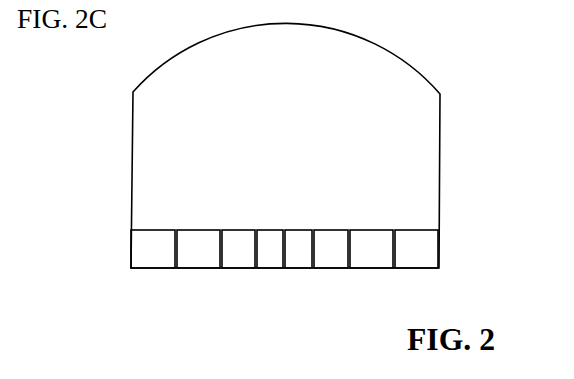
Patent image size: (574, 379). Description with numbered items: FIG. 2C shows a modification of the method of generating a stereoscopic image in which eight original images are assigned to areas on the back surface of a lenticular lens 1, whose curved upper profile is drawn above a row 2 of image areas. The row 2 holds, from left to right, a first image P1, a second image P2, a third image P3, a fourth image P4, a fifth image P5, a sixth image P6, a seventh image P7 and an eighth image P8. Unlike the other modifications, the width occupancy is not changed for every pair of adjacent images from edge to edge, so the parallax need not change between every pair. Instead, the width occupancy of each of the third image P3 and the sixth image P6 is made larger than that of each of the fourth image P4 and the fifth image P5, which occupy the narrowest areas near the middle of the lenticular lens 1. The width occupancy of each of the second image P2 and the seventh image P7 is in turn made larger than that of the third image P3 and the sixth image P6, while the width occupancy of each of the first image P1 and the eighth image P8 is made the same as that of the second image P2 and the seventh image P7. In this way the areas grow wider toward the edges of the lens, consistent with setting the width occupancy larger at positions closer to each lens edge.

The lenticular lens 1 is at (421, 144).
The row of pixels 2 is at (330, 249).
The first image P1 is at (153, 249).
The second image P2 is at (198, 249).
The third image P3 is at (238, 249).
The fourth image P4 is at (270, 249).
The fifth image P5 is at (298, 249).
The sixth image P6 is at (331, 249).
The seventh image P7 is at (371, 249).
The eighth image P8 is at (416, 249).